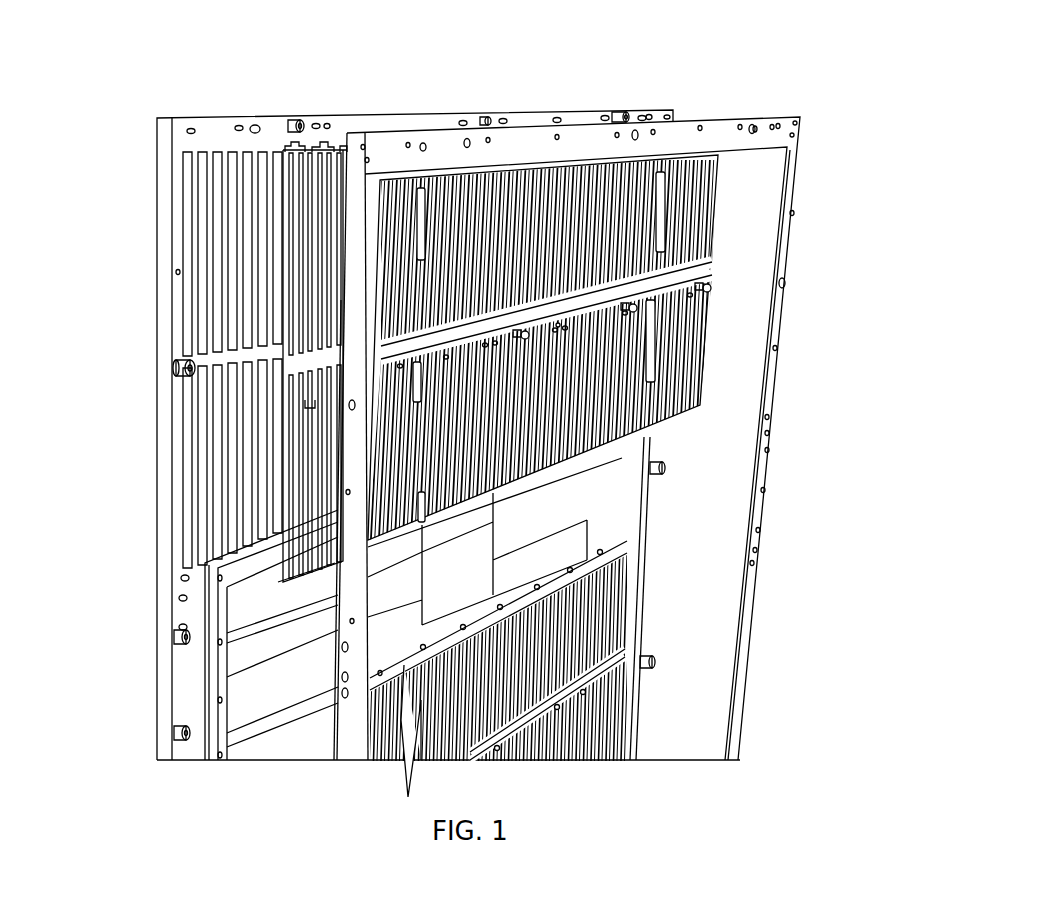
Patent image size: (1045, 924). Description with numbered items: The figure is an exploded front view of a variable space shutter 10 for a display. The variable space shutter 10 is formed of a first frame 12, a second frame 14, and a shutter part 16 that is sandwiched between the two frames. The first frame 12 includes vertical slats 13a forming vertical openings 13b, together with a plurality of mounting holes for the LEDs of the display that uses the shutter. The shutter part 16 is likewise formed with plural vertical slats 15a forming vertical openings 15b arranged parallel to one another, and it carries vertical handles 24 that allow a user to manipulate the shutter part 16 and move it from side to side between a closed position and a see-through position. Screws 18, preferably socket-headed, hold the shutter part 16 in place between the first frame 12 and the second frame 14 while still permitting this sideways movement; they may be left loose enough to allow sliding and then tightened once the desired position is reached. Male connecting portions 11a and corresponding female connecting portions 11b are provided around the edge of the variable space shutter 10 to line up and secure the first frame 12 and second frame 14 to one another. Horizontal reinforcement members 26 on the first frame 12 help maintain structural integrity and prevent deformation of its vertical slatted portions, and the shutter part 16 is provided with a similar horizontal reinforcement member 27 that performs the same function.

The variable space shutter 10 is at (830, 27).
The male connecting portions 11a is at (627, 120).
The female connecting portions 11b is at (757, 130).
The first frame 12 is at (243, 115).
The vertical slats 13a is at (226, 150).
The vertical openings 13b is at (200, 157).
The second frame 14 is at (588, 135).
The vertical slats 15a is at (300, 492).
The vertical openings 15b is at (333, 627).
The shutter part 16 is at (330, 150).
The screws 18 is at (525, 335).
The vertical handles 24 is at (660, 192).
The horizontal reinforcement members 26 is at (235, 355).
The horizontal reinforcement member 27 is at (715, 270).